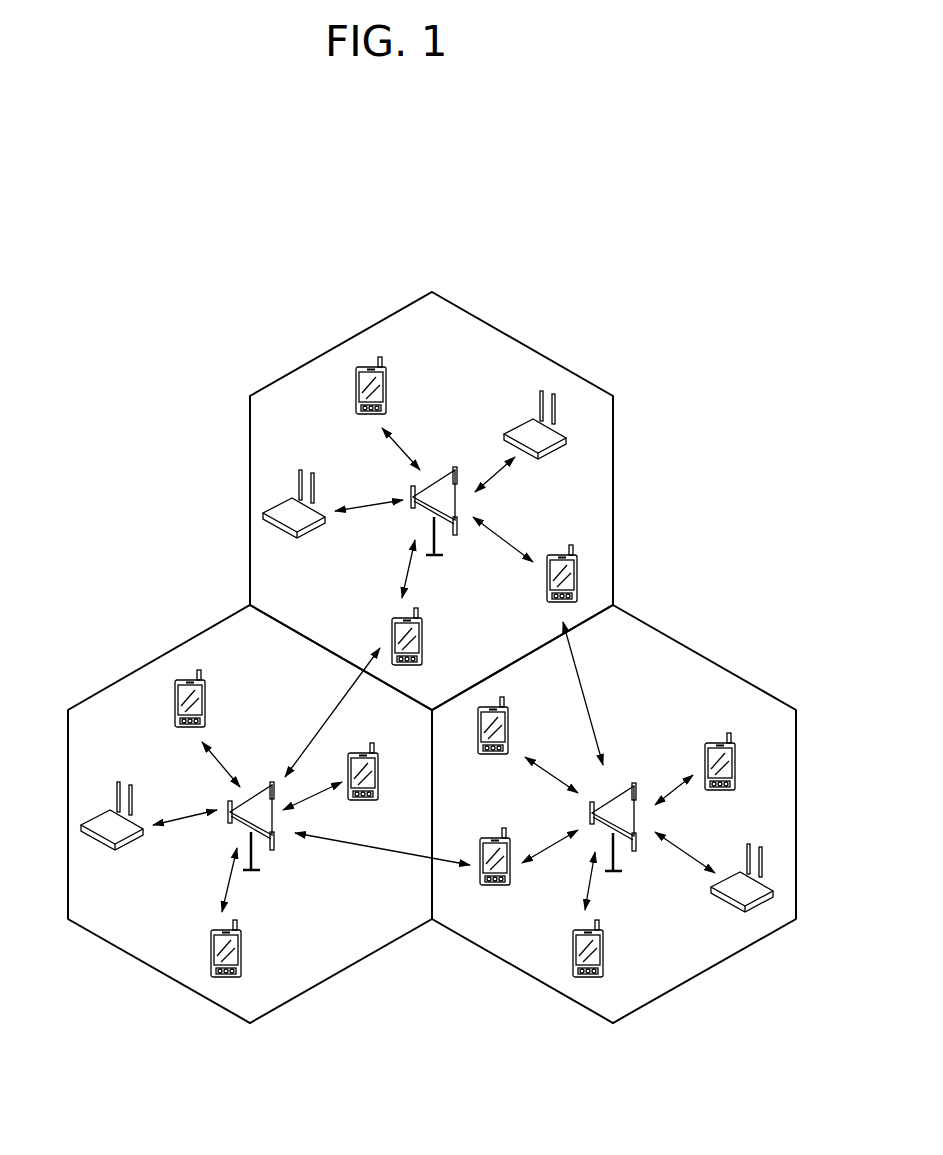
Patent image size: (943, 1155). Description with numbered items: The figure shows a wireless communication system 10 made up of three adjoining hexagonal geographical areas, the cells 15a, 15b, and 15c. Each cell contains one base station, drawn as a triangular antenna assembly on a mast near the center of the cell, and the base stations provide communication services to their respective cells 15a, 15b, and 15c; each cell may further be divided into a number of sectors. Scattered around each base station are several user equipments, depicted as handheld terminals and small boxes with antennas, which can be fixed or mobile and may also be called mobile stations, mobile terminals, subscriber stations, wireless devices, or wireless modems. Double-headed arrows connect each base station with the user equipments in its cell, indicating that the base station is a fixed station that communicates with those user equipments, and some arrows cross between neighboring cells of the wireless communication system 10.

The wireless communication system 10 is at (690, 401).
The cell 15a is at (613, 490).
The cell 15b is at (726, 668).
The cell 15c is at (137, 668).